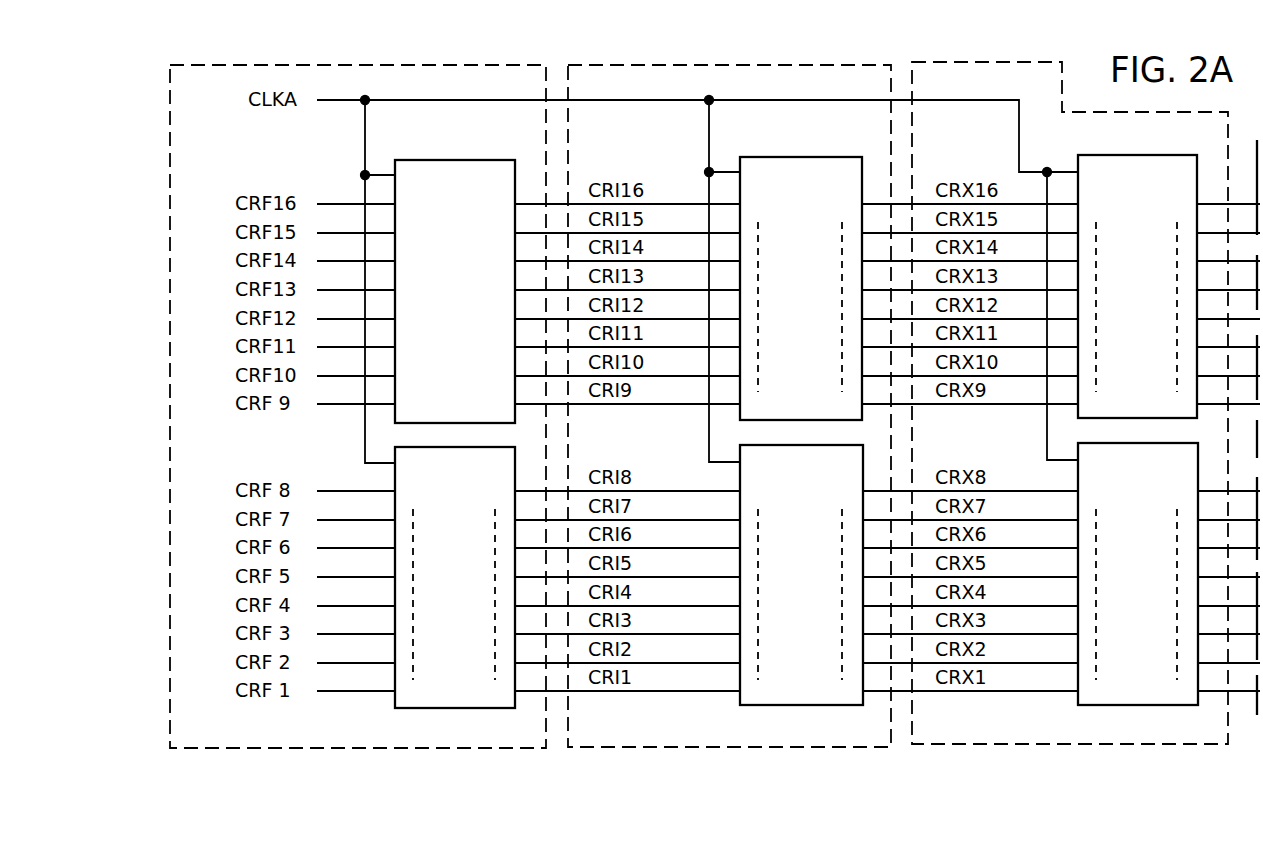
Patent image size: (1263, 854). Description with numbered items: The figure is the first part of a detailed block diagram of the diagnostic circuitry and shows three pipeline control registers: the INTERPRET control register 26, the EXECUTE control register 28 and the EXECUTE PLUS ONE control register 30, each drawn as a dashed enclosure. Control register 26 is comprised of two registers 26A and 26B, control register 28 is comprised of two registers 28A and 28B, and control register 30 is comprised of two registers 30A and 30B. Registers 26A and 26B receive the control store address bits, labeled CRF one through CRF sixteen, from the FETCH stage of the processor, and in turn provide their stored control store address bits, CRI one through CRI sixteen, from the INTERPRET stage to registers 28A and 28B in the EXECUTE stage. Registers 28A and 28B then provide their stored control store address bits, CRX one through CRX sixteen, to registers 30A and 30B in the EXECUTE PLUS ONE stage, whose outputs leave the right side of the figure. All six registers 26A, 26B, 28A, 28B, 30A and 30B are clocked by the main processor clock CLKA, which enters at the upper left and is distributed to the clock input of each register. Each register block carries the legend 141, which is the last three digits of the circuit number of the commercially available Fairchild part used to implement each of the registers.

The INTERPRET control register 26 is at (376, 62).
The EXECUTE control register 28 is at (716, 62).
The EXECUTE+1 control register 30 is at (1020, 62).
The register 26A is at (479, 160).
The register 26B is at (395, 702).
The register 28A is at (820, 157).
The register 28B is at (740, 702).
The register 30A is at (1158, 155).
The register 30B is at (1079, 702).
The circuit number F100141 141 is at (795, 434).